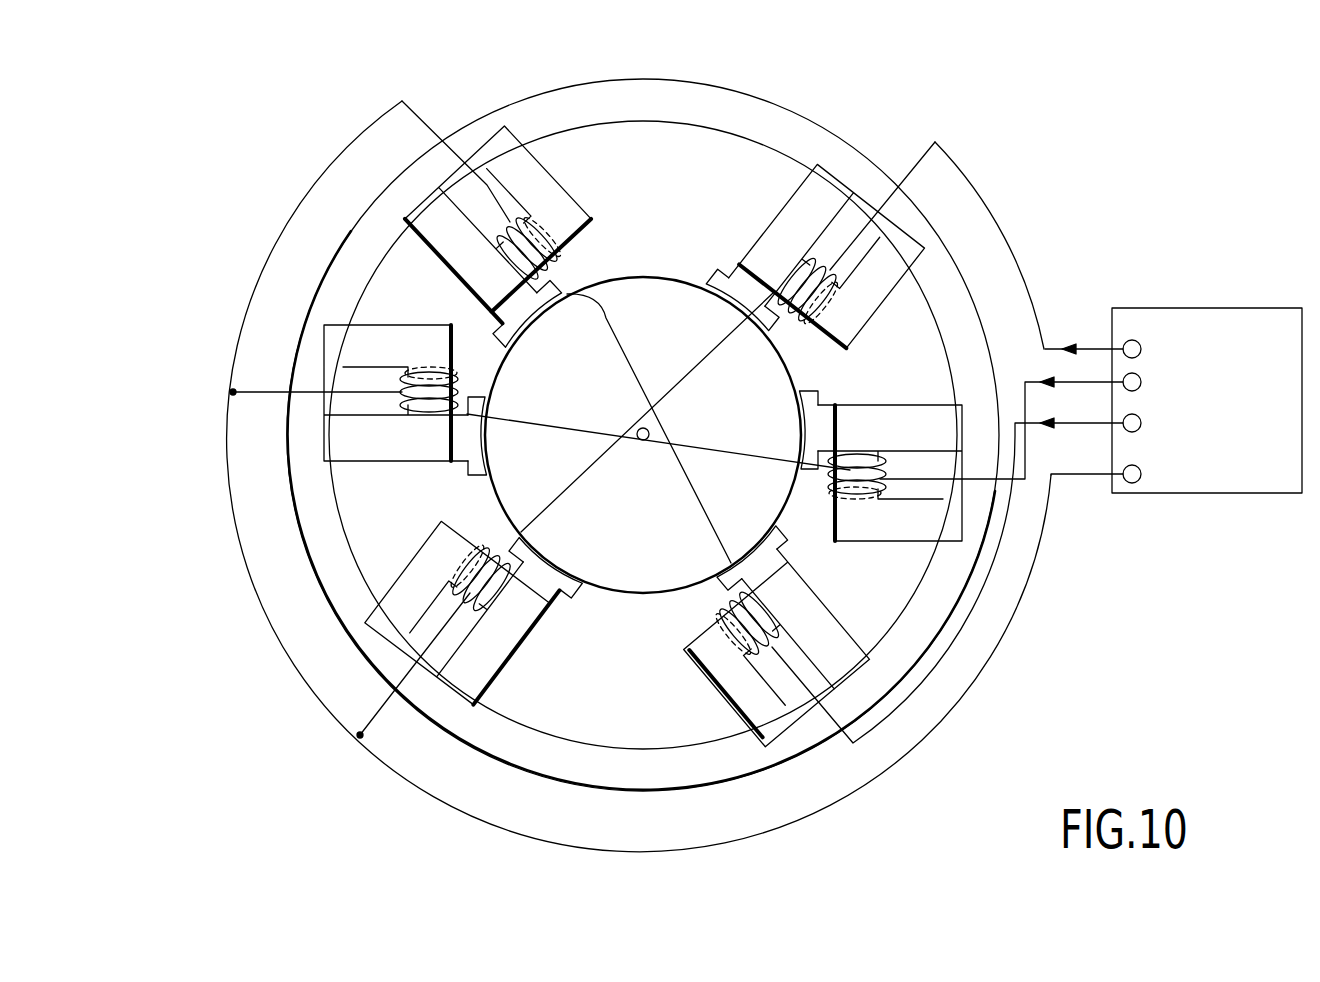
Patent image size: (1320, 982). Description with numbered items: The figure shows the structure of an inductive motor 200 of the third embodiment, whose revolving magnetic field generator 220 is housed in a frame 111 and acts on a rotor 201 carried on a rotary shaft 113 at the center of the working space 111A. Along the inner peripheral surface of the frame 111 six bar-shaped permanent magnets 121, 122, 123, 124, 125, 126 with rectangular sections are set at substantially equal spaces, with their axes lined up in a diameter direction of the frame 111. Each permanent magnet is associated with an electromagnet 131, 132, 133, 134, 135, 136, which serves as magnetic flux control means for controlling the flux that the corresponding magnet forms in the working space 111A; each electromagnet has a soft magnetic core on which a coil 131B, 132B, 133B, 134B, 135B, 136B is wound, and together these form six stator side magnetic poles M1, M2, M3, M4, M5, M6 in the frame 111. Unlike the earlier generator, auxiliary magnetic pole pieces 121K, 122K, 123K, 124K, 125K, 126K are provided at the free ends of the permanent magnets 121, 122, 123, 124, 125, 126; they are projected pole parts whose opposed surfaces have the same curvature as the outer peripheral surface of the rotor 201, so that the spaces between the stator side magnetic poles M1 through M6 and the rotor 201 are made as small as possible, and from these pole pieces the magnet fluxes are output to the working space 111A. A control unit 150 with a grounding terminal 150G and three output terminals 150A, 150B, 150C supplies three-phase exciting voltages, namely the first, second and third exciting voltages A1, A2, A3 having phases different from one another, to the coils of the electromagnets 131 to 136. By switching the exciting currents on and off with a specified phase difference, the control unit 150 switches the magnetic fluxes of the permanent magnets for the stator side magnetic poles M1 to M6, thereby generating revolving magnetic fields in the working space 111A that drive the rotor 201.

The frame 111 is at (540, 110).
The working space 111A is at (656, 135).
The inductive motor 200 is at (1035, 153).
The revolving magnetic field generator 220 is at (615, 716).
The rotor 201 is at (625, 275).
The rotary shaft 113 is at (645, 446).
The permanent magnet 121 is at (797, 203).
The auxiliary magnetic pole piece 121K is at (735, 298).
The electromagnet 131 is at (822, 318).
The coil 131B is at (775, 340).
The stator side magnetic pole M1 is at (773, 222).
The permanent magnet 122 is at (918, 427).
The auxiliary magnetic pole piece 122K is at (800, 425).
The electromagnet 132 is at (884, 536).
The coil 132B is at (815, 483).
The stator side magnetic pole M2 is at (922, 404).
The permanent magnet 123 is at (848, 650).
The auxiliary magnetic pole piece 123K is at (752, 562).
The electromagnet 133 is at (703, 650).
The coil 133B is at (725, 605).
The stator side magnetic pole M3 is at (716, 694).
The permanent magnet 124 is at (480, 672).
The auxiliary magnetic pole piece 124K is at (543, 582).
The electromagnet 134 is at (445, 550).
The coil 134B is at (497, 547).
The stator side magnetic pole M4 is at (527, 640).
The permanent magnet 125 is at (348, 450).
The auxiliary magnetic pole piece 125K is at (485, 448).
The electromagnet 135 is at (435, 364).
The coil 135B is at (455, 386).
The stator side magnetic pole M5 is at (355, 466).
The permanent magnet 126 is at (443, 223).
The auxiliary magnetic pole piece 126K is at (520, 306).
The electromagnet 136 is at (550, 170).
The coil 136B is at (557, 242).
The stator side magnetic pole M6 is at (447, 270).
The control unit 150 is at (1205, 307).
The output terminal 150A is at (1163, 349).
The output terminal 150B is at (1163, 382).
The output terminal 150C is at (1163, 423).
The grounding terminal 150G is at (1163, 474).
The first exciting voltage A1 is at (976, 248).
The second exciting voltage A2 is at (795, 416).
The third exciting voltage A3 is at (947, 568).